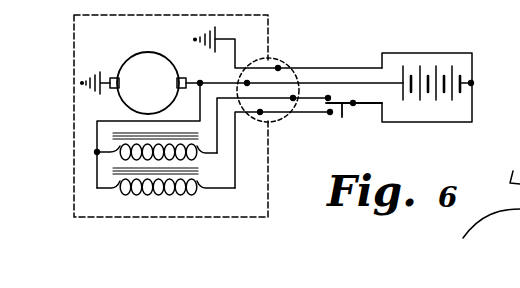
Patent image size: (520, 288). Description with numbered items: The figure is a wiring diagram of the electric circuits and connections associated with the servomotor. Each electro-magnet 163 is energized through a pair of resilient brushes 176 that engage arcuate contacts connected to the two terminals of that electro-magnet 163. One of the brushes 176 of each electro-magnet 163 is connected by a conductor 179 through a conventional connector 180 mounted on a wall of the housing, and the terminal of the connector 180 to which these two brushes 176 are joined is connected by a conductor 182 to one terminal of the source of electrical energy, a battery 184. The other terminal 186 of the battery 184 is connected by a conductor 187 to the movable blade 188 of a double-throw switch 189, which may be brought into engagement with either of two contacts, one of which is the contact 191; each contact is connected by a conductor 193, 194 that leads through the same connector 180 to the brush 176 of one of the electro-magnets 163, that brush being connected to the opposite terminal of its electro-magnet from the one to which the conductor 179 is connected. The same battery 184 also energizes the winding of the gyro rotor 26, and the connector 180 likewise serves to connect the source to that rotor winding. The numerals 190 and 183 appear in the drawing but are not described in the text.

The rotor 26 is at (173, 42).
The conductor 179 is at (100, 121).
The electro-magnet 163 is at (122, 155).
The resilient brushes 176 is at (100, 190).
The connector 180 is at (279, 67).
The conductor 182 is at (311, 82).
The switch contact 190 is at (331, 97).
The contact 191 is at (329, 107).
The movable blade 188 is at (372, 86).
The double-throw switch 189 is at (372, 80).
The battery cell 183 is at (392, 65).
The battery 184 is at (434, 68).
The terminal 186 is at (472, 82).
The conductor 187 is at (449, 92).
The conductor 193 is at (236, 165).
The conductor 194 is at (218, 139).